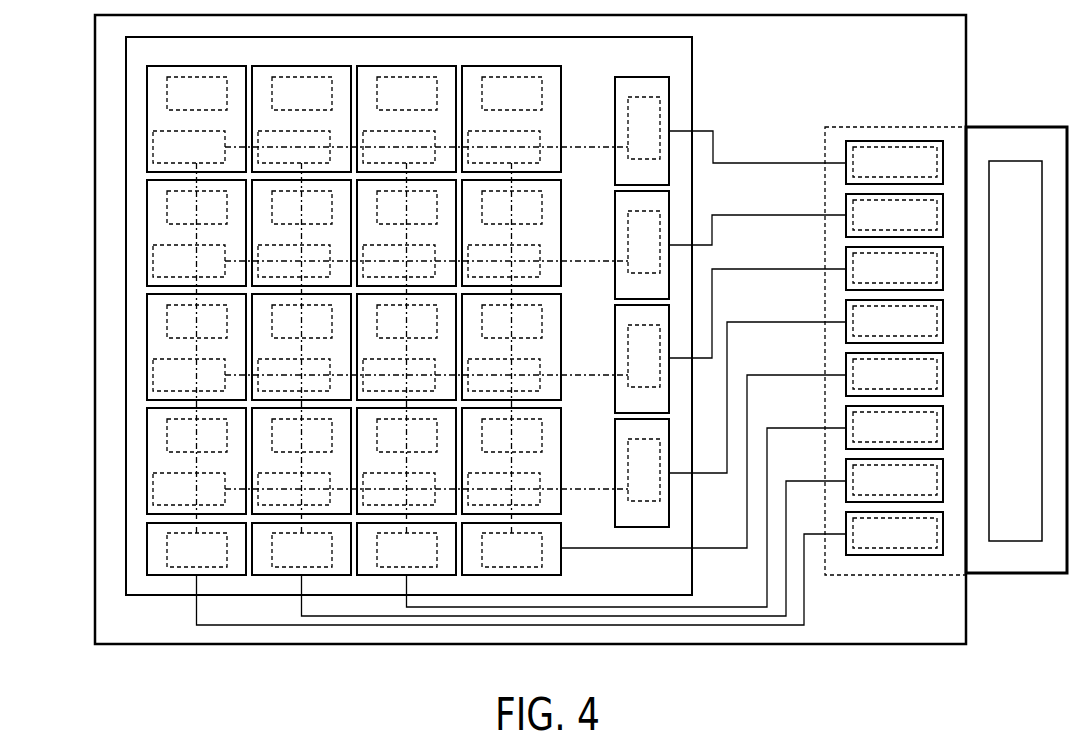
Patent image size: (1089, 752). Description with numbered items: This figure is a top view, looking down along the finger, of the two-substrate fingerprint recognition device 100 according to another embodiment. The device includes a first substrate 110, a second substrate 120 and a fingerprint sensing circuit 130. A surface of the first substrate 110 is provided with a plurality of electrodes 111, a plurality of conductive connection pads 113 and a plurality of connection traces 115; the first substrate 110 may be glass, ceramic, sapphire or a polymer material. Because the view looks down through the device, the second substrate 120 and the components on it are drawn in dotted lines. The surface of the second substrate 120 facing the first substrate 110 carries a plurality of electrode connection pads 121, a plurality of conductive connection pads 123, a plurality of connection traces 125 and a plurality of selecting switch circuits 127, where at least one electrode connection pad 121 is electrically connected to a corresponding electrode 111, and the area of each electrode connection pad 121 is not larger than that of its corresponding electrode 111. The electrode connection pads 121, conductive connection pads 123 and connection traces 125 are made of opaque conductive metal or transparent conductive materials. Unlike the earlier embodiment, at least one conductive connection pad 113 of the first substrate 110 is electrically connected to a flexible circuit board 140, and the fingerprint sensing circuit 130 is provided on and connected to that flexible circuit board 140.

The two-substrate fingerprint recognition device 100 is at (1026, 37).
The first substrate 110 is at (868, 644).
The electrode 111 is at (147, 122).
The conductive connection pad 113 is at (147, 555).
The connection trace 115 is at (772, 163).
The second substrate 120 is at (134, 595).
The electrode connection pad 121 is at (167, 94).
The conductive connection pad 123 is at (180, 567).
The connection trace 125 is at (196, 186).
The selecting switch circuit 127 is at (153, 151).
The fingerprint sensing circuit 130 is at (1012, 541).
The flexible circuit board 140 is at (1047, 573).